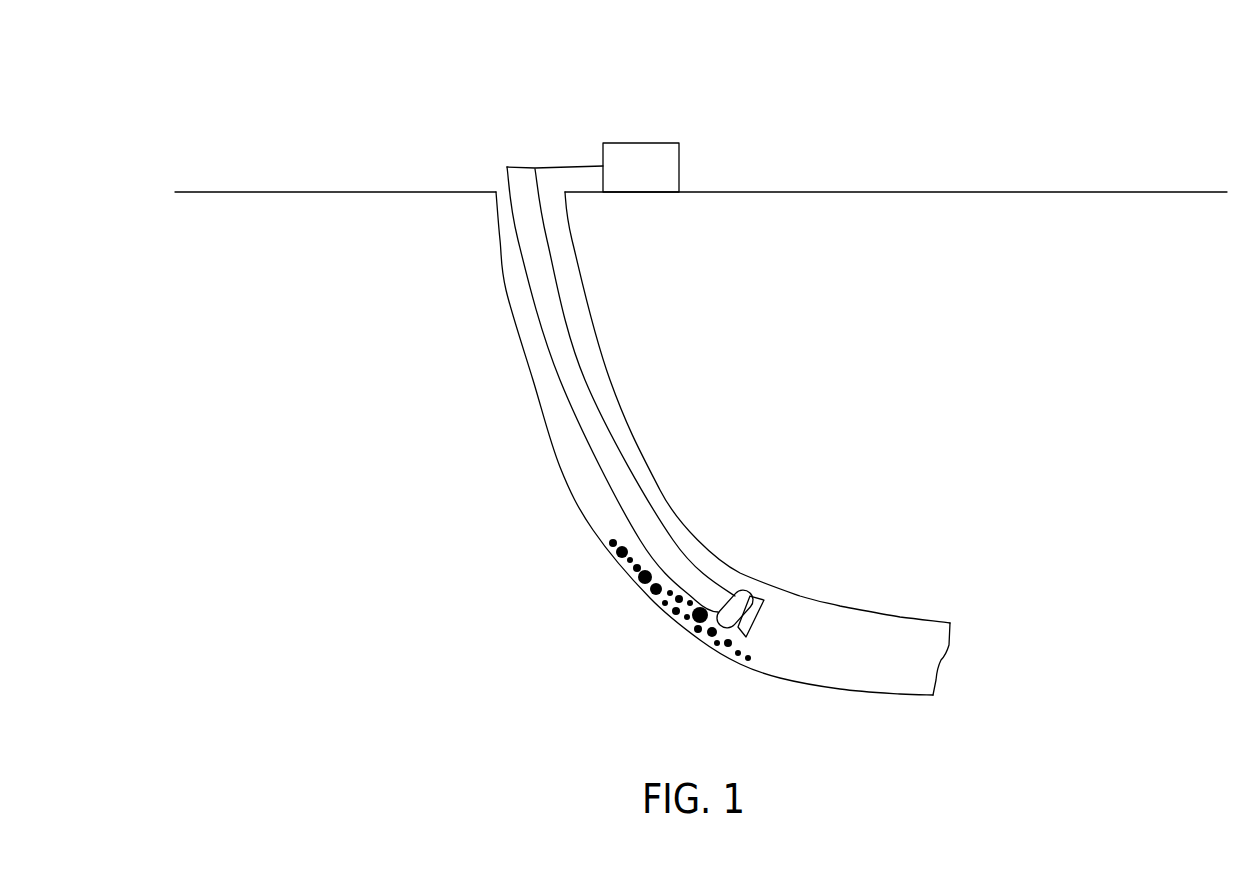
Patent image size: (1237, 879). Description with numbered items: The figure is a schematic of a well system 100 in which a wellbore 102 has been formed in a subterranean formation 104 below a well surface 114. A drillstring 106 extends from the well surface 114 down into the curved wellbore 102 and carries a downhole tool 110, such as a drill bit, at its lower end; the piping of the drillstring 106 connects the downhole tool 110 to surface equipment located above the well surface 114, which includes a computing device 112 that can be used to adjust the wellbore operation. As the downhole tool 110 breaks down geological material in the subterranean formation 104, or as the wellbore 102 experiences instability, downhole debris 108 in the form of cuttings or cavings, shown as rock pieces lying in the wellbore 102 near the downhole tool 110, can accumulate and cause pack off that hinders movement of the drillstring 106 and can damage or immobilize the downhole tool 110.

The well system 100 is at (283, 101).
The wellbore 102 is at (498, 252).
The subterranean formation 104 is at (395, 411).
The drillstring 106 is at (577, 408).
The downhole debris 108 is at (640, 580).
The downhole tool 110 is at (740, 592).
The computing device 112 is at (641, 152).
The well surface 114 is at (940, 192).